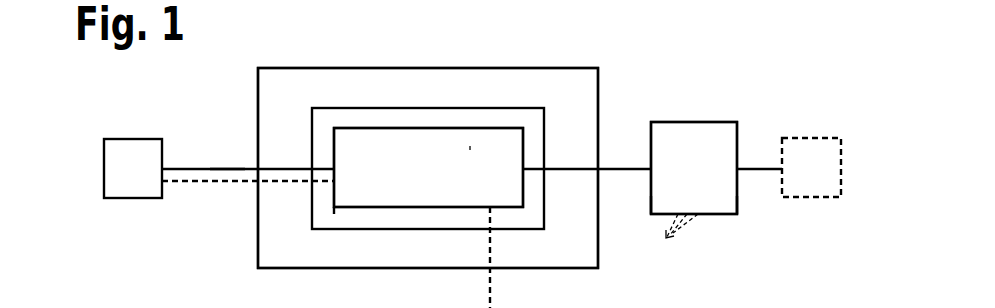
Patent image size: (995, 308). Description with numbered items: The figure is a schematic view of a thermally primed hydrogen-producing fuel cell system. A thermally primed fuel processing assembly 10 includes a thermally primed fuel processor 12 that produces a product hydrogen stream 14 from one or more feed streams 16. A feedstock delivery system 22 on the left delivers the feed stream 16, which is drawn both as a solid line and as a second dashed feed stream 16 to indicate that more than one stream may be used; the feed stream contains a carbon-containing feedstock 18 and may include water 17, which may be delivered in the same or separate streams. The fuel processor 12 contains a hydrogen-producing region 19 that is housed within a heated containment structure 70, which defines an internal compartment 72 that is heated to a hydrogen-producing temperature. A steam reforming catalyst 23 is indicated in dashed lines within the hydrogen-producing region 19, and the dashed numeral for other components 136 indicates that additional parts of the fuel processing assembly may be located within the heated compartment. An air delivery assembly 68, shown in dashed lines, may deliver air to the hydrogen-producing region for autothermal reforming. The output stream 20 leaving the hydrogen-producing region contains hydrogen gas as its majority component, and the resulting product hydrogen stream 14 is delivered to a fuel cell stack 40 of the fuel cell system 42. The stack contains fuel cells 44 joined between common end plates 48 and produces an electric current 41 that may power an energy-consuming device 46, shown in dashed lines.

The thermally primed fuel processing assembly 10 is at (281, 43).
The thermally primed fuel processor 12 is at (345, 60).
The product hydrogen stream 14 is at (612, 168).
The feed stream 16 is at (208, 170).
The water 17 is at (193, 182).
The carbon-containing feedstock 18 is at (239, 180).
The hydrogen-producing region 19 is at (397, 126).
The output stream 20 is at (562, 168).
The feedstock delivery system 22 is at (133, 136).
The steam reforming catalyst 23 is at (470, 146).
The fuel cell stack 40 is at (688, 120).
The electric current 41 is at (752, 168).
The fuel cell system 42 is at (690, 82).
The fuel cells 44 is at (675, 241).
The energy-consuming device 46 is at (800, 137).
The end plates 48 is at (651, 200).
The air delivery assembly 68 is at (493, 288).
The heated containment structure 70 is at (378, 233).
The internal compartment 72 is at (443, 218).
The other components of the fuel processing assembly 136 is at (355, 214).